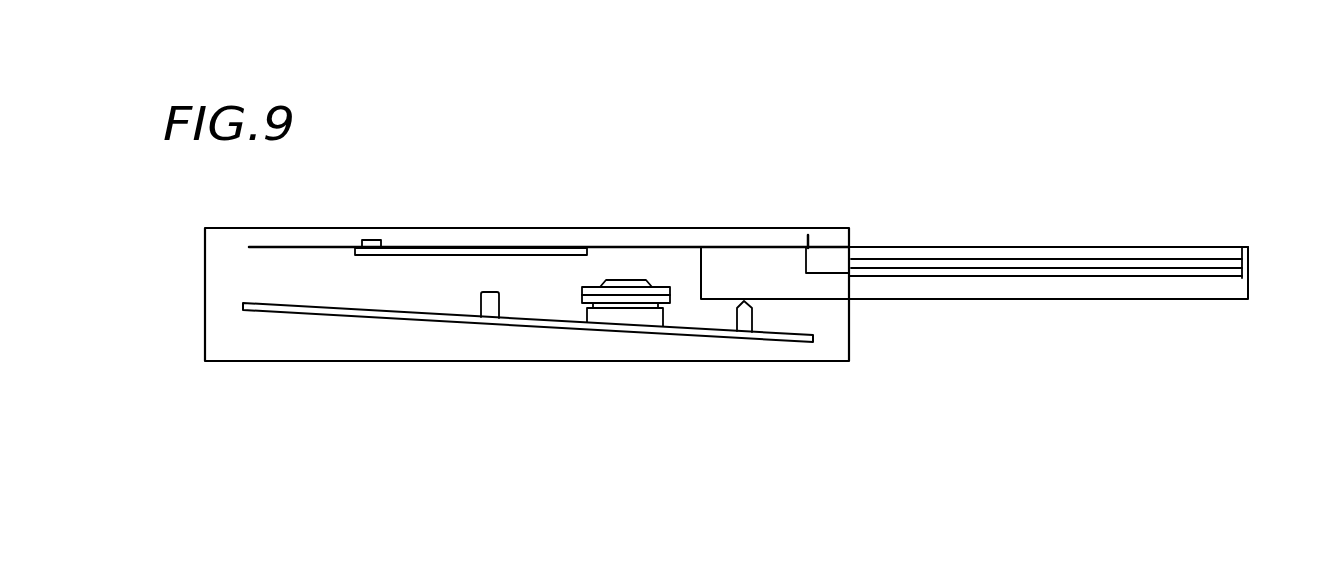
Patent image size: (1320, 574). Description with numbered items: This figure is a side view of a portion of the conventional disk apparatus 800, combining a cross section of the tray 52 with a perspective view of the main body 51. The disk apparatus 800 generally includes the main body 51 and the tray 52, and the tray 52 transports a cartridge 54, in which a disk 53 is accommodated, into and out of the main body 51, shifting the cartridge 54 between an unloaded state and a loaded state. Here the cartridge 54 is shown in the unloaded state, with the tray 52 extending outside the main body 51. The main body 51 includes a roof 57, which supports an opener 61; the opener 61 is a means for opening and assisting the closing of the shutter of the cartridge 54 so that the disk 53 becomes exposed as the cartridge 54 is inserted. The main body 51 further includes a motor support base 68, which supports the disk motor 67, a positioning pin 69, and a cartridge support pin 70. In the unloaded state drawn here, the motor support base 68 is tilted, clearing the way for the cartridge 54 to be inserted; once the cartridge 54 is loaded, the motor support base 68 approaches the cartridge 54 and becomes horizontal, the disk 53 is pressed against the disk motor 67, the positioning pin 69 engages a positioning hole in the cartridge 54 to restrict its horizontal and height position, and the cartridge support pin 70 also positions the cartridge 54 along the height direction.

The main body 51 is at (838, 228).
The tray 52 is at (1084, 288).
The disk 53 is at (1035, 258).
The cartridge 54 is at (1145, 258).
The roof 57 is at (293, 247).
The opener 61 is at (355, 252).
The disk motor 67 is at (620, 318).
The motor support base 68 is at (552, 330).
The positioning pin 69 is at (742, 320).
The cartridge support pin 70 is at (490, 310).
The disk apparatus 800 is at (1222, 368).